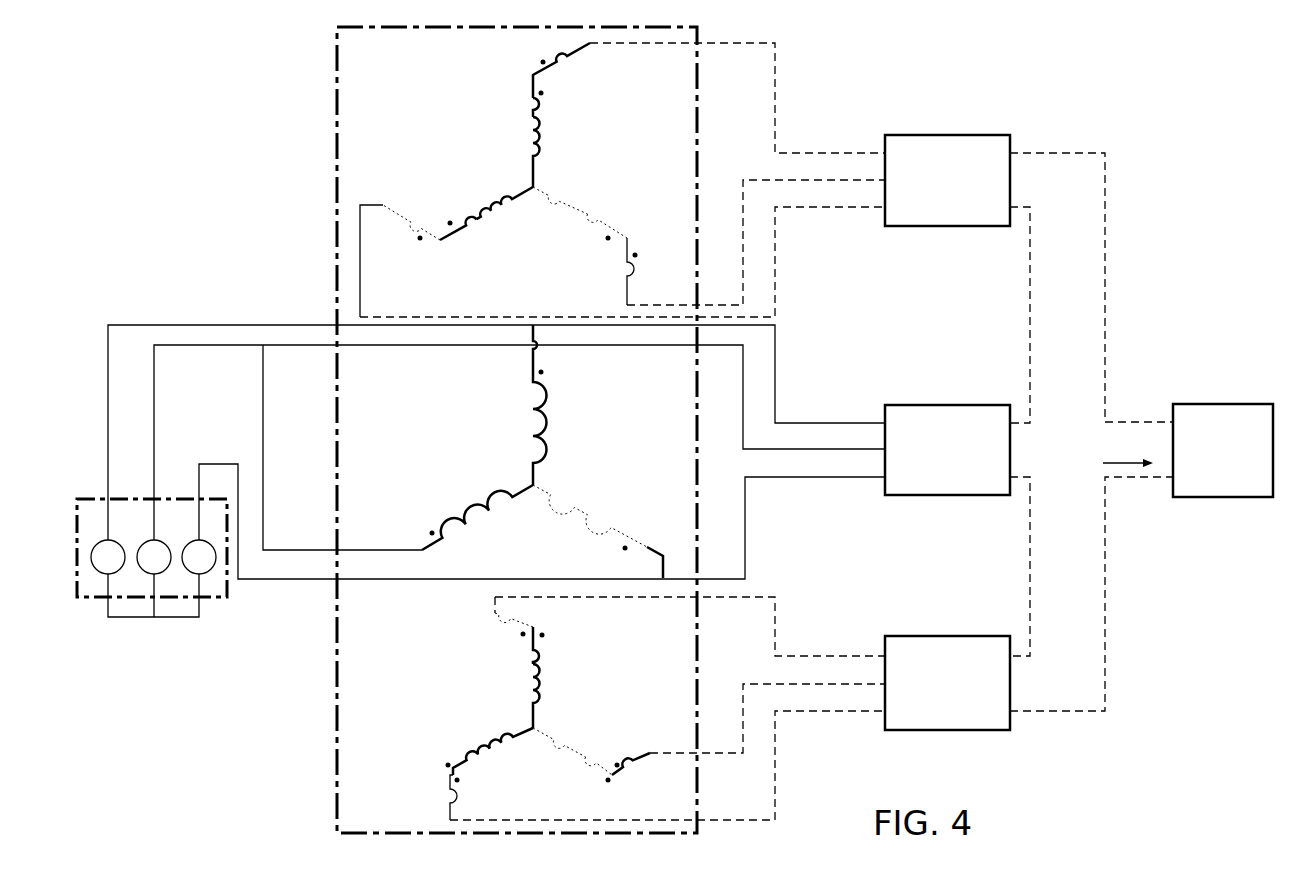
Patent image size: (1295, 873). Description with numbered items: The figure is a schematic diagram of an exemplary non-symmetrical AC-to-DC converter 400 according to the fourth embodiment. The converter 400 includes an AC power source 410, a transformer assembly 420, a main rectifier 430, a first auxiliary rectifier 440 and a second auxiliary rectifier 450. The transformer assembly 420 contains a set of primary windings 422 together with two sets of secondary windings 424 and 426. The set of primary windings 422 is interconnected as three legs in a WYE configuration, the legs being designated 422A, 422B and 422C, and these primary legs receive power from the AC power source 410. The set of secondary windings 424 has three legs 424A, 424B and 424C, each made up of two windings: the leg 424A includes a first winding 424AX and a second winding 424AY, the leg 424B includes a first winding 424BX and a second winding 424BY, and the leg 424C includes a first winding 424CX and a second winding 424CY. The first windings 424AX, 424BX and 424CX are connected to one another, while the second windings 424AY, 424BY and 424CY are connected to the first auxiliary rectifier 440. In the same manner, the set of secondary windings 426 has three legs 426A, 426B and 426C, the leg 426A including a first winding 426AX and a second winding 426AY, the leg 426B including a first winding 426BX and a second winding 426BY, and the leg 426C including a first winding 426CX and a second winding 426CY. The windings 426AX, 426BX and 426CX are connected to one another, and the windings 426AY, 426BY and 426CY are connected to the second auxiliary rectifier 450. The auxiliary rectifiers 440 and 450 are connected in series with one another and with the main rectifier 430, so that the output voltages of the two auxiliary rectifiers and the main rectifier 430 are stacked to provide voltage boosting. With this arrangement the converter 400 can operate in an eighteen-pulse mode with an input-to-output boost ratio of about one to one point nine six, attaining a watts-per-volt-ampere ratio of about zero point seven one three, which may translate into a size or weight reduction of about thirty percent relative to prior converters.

The non-symmetrical AC-to-DC converter 400 is at (200, 133).
The AC power source 410 is at (97, 600).
The transformer assembly 420 is at (337, 98).
The set of primary windings 422 is at (449, 400).
The primary winding leg 422A is at (548, 412).
The primary winding leg 422B is at (596, 528).
The primary winding leg 422C is at (505, 497).
The set of secondary windings 424 is at (443, 97).
The secondary winding leg 424A is at (546, 134).
The first winding 424AX is at (546, 104).
The second winding 424AY is at (548, 58).
The secondary winding leg 424B is at (600, 230).
The first winding 424BX is at (562, 207).
The second winding 424BY is at (626, 275).
The secondary winding leg 424C is at (503, 188).
The first winding 424CX is at (462, 230).
The second winding 424CY is at (410, 230).
The set of secondary windings 426 is at (457, 672).
The secondary winding leg 426A is at (548, 693).
The first winding 426AX is at (545, 652).
The second winding 426AY is at (502, 620).
The secondary winding leg 426B is at (588, 765).
The first winding 426BX is at (563, 775).
The second winding 426BY is at (636, 780).
The secondary winding leg 426C is at (463, 755).
The first winding 426CX is at (503, 730).
The second winding 426CY is at (453, 800).
The main rectifier 430 is at (947, 405).
The first auxiliary rectifier 440 is at (947, 135).
The second auxiliary rectifier 450 is at (947, 636).